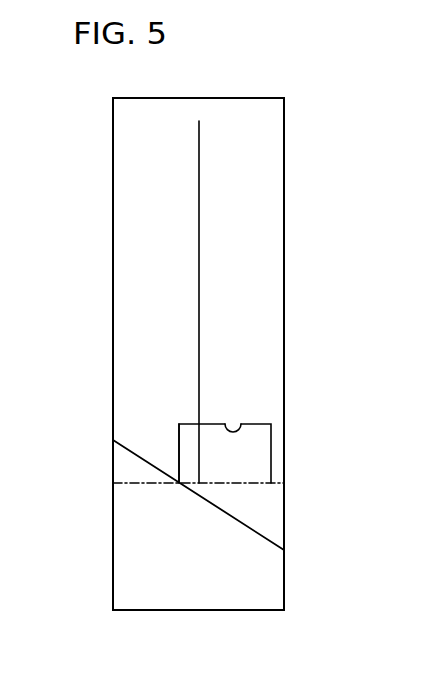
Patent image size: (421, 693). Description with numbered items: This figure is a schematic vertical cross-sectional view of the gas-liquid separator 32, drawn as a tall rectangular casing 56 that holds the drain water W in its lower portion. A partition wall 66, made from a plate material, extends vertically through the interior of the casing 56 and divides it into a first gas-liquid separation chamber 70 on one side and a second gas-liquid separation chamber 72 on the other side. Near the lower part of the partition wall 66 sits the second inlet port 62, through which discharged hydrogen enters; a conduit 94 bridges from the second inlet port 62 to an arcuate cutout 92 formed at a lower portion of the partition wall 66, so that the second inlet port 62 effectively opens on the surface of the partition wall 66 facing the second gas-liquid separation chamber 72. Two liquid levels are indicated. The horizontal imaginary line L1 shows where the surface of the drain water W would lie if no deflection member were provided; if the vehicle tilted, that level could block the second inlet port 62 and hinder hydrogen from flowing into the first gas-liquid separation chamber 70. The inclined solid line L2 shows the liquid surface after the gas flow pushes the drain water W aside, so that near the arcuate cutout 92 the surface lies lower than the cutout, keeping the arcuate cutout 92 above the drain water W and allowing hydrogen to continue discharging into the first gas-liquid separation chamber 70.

The gas-liquid separator 32 is at (346, 66).
The casing 56 is at (97, 105).
The first gas-liquid separation chamber 70 is at (265, 149).
The second gas-liquid separation chamber 72 is at (130, 197).
The partition wall 66 is at (200, 217).
The second inlet port 62 is at (276, 438).
The arcuate cutout 92 is at (178, 440).
The conduit 94 is at (237, 423).
The imaginary line L1 is at (250, 482).
The solid line L2 is at (248, 528).
The drain water W is at (238, 598).